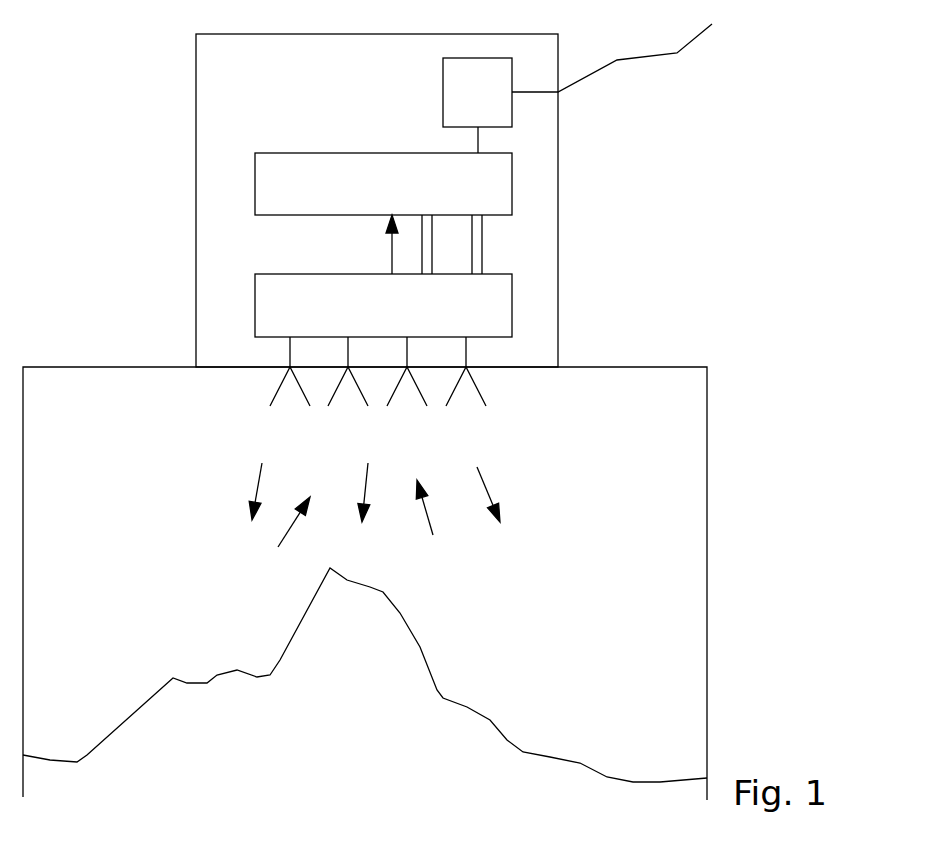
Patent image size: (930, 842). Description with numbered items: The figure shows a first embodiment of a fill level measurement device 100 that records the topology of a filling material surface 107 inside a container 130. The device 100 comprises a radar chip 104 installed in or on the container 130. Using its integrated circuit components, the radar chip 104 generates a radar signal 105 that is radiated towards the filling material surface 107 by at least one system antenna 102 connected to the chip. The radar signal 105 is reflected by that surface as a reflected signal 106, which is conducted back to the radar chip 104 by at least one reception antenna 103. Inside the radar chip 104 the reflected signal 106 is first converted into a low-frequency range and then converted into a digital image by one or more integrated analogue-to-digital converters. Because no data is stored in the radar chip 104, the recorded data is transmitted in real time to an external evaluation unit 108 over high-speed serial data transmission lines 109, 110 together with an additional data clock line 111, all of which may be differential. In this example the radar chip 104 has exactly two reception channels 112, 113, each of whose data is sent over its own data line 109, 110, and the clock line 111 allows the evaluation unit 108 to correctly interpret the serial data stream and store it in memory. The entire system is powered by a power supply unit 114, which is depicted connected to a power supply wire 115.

The fill level measurement device 100 is at (196, 155).
The system antenna 102 is at (290, 405).
The reception antenna 103 is at (447, 418).
The radar chip 104 is at (502, 303).
The radar signal 105 is at (257, 480).
The reflected signal 106 is at (297, 525).
The filling material surface 107 is at (213, 675).
The evaluation unit 108 is at (498, 180).
The data transmission line 109 is at (483, 253).
The data transmission line 110 is at (432, 243).
The data clock line 111 is at (392, 248).
The reception channel 112 is at (407, 355).
The reception channel 113 is at (467, 343).
The power supply unit 114 is at (443, 85).
The power supply wire 115 is at (677, 53).
The container 130 is at (707, 535).